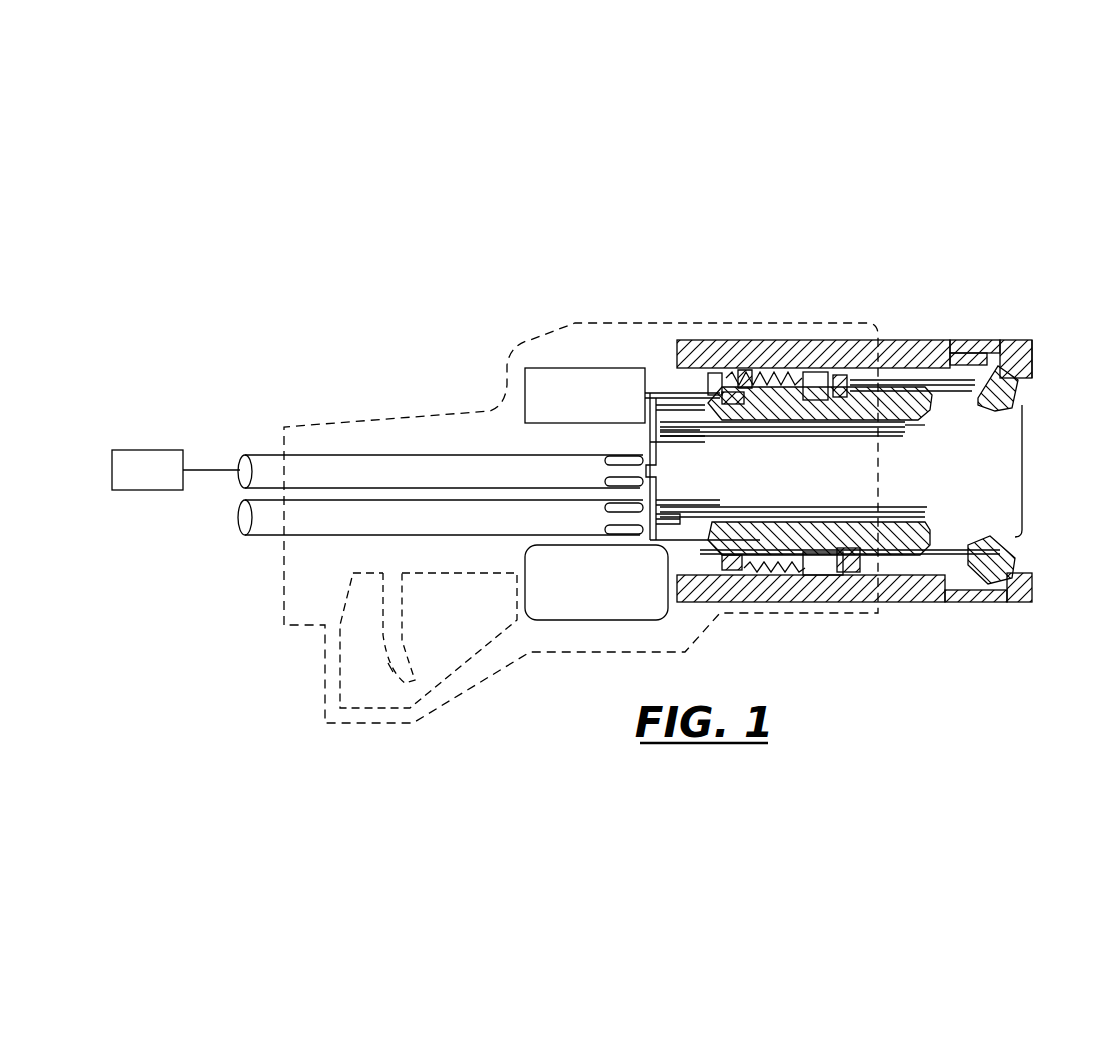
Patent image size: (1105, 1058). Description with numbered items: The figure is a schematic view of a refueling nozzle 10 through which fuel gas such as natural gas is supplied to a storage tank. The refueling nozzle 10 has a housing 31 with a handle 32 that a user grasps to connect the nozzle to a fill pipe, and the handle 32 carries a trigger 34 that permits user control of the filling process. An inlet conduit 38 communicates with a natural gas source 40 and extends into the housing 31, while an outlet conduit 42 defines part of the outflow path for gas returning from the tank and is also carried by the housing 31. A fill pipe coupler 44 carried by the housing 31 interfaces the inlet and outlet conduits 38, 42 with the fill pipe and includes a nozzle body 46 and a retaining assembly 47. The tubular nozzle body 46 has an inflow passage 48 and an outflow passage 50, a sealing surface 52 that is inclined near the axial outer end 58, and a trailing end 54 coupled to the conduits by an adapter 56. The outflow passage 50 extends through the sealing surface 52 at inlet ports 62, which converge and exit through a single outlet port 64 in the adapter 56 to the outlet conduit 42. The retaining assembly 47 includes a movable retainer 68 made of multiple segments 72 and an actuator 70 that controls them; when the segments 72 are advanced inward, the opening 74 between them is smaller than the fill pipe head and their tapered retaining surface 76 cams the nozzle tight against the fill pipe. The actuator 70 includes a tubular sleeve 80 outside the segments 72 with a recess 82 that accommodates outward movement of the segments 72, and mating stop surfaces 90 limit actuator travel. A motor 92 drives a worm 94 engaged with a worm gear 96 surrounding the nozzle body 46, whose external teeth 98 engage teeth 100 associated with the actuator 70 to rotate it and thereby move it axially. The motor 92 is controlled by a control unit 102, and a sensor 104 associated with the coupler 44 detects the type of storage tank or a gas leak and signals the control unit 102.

The refueling nozzle 10 is at (330, 335).
The housing 31 is at (578, 322).
The handle 32 is at (283, 625).
The trigger 34 is at (378, 725).
The inlet conduit 38 is at (258, 465).
The natural gas source 40 is at (130, 456).
The outlet conduit 42 is at (260, 525).
The fill pipe coupler 44 is at (918, 335).
The nozzle body 46 is at (830, 372).
The retaining assembly 47 is at (1042, 356).
The inflow passage 48 is at (830, 440).
The outflow passage 50 is at (803, 400).
The sealing surface 52 is at (922, 535).
The trailing end 54 is at (663, 400).
The adapter 56 is at (654, 440).
The axial outer end 58 is at (903, 425).
The inlet ports 62 is at (917, 424).
The outlet port 64 is at (653, 520).
The movable retainer 68 is at (1030, 394).
The actuator 70 is at (1003, 332).
The segments 72 is at (897, 368).
The opening 74 is at (1024, 471).
The retaining surface 76 is at (1010, 368).
The tubular sleeve 80 is at (760, 585).
The recess 82 is at (965, 355).
The stop surfaces 90 is at (862, 575).
The motor 92 is at (547, 382).
The worm 94 is at (738, 390).
The worm gear 96 is at (800, 385).
The external teeth 98 is at (783, 392).
The teeth 100 is at (763, 385).
The control unit 102 is at (548, 608).
The sensor 104 is at (1035, 585).